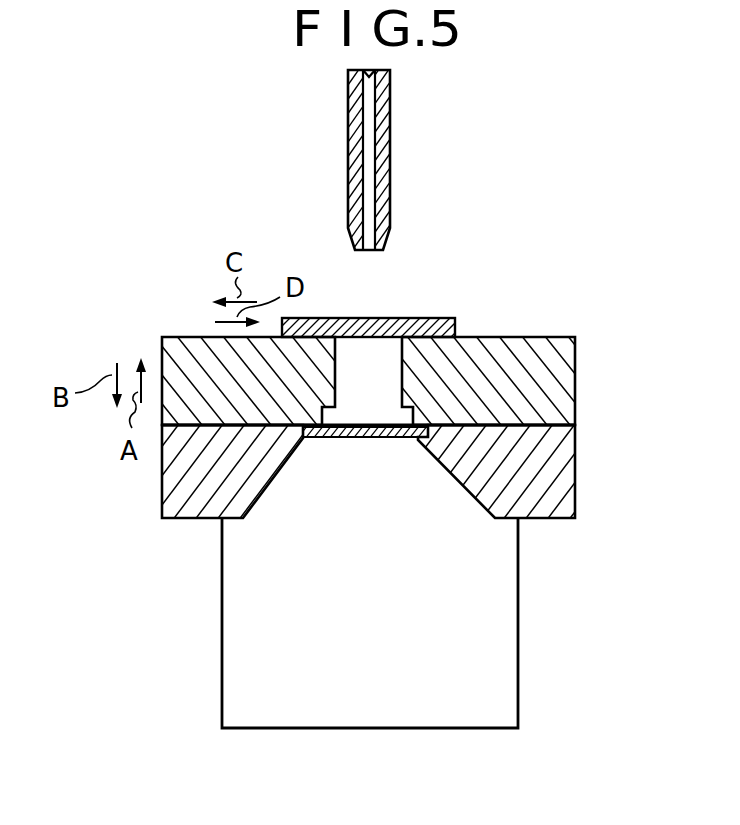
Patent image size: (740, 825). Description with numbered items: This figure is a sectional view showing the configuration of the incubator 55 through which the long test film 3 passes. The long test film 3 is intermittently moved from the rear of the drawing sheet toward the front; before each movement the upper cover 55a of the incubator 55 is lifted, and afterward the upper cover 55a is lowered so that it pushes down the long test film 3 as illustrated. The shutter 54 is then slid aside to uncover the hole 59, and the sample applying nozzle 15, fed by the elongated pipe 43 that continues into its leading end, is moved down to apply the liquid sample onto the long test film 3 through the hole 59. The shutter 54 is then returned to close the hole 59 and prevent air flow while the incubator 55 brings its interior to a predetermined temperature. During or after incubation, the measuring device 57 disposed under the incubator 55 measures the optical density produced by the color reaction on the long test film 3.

The sample applying nozzle 15 is at (392, 153).
The elongated pipe 43 is at (369, 110).
The shutter 54 is at (442, 322).
The upper cover 55a is at (558, 347).
The hole 59 is at (362, 362).
The incubator 55 is at (548, 458).
The long test film 3 is at (394, 439).
The measuring device 57 is at (498, 582).